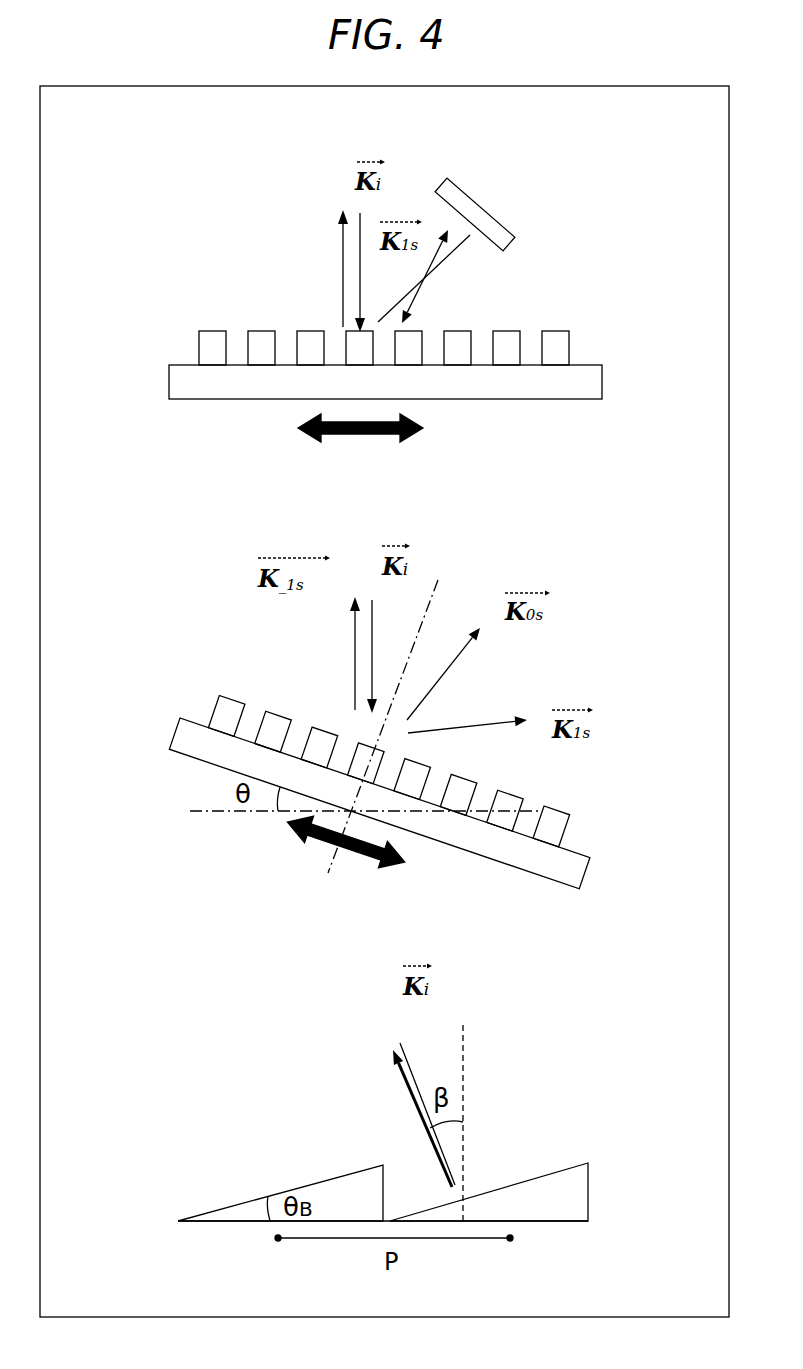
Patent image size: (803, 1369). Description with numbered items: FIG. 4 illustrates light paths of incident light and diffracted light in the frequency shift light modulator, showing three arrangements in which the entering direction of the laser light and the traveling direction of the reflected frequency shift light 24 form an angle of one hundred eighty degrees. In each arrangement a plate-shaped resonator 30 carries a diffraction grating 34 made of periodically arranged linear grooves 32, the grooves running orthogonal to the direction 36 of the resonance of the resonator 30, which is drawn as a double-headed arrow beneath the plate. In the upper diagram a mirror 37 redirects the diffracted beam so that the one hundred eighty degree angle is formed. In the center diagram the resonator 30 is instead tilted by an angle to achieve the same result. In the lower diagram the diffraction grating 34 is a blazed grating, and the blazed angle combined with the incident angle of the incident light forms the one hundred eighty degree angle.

The frequency shift light 24 is at (340, 258).
The resonator 30 is at (228, 385).
The linear grooves 32 is at (287, 330).
The diffraction grating 34 is at (387, 700).
The direction of the resonance 36 is at (353, 437).
The mirror 37 is at (468, 192).